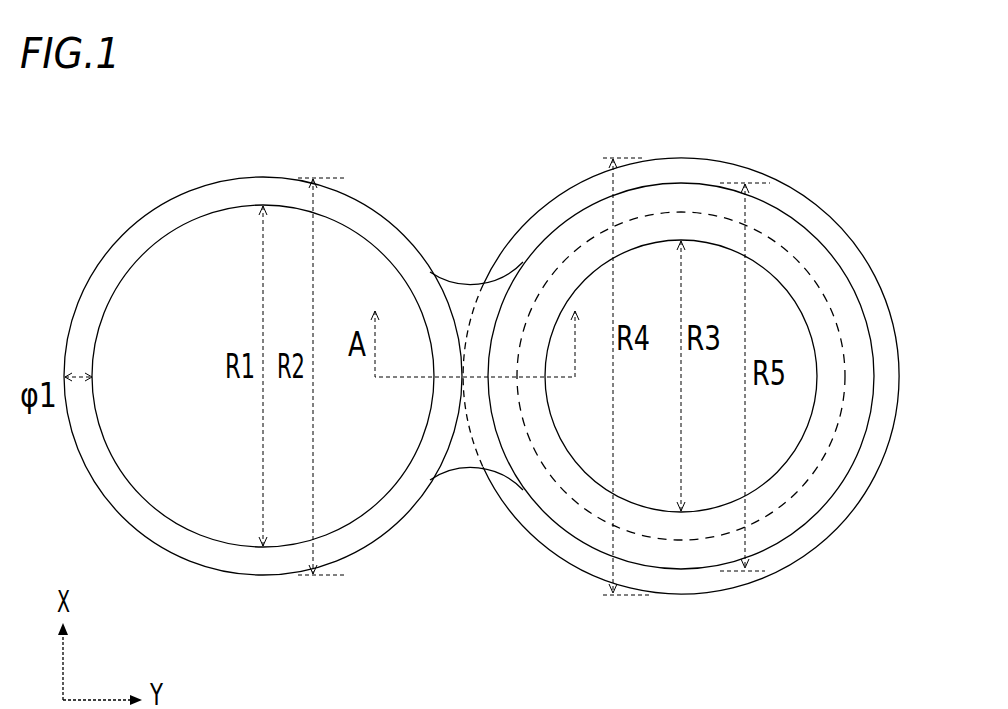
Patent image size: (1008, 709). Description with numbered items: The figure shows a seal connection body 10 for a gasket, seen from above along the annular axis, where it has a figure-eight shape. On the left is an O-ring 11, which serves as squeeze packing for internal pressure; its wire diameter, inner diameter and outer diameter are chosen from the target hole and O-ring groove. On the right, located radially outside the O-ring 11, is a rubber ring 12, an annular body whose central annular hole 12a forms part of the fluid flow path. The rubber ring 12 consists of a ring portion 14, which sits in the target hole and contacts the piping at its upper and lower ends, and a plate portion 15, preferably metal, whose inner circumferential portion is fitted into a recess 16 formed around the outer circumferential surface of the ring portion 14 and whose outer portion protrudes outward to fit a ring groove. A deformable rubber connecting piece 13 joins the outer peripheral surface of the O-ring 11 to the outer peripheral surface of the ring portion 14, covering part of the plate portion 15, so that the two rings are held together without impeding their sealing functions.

The seal connection body 10 is at (518, 185).
The O-ring 11 is at (212, 183).
The rubber ring 12 is at (681, 348).
The annular hole 12a is at (722, 252).
The connecting piece 13 is at (458, 281).
The ring portion 14 is at (782, 211).
The plate portion 15 is at (586, 179).
The recess 16 is at (803, 266).